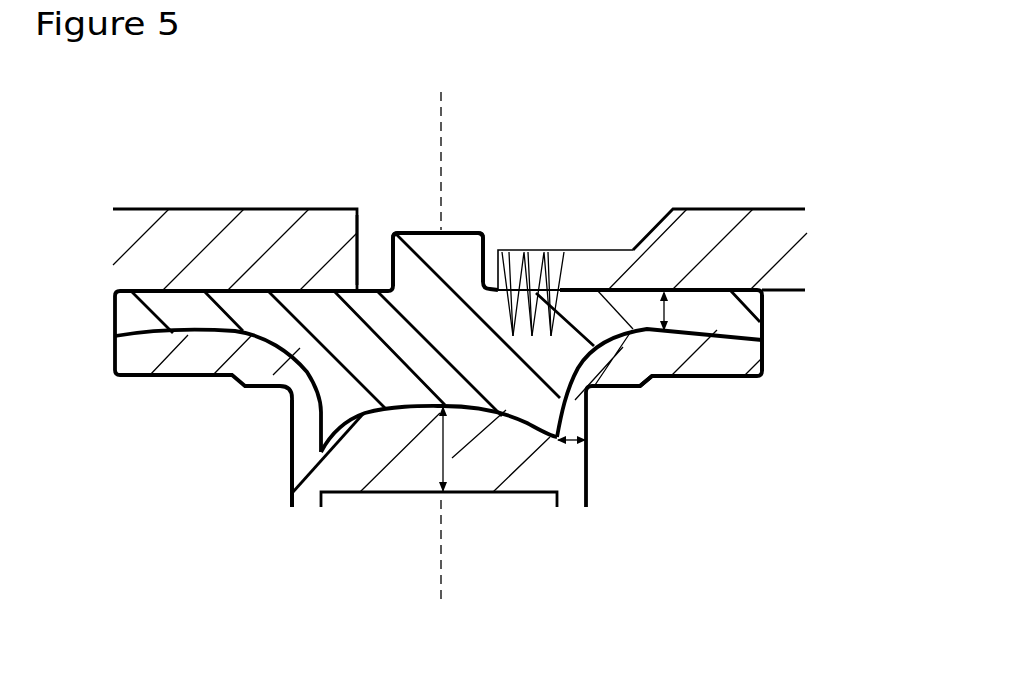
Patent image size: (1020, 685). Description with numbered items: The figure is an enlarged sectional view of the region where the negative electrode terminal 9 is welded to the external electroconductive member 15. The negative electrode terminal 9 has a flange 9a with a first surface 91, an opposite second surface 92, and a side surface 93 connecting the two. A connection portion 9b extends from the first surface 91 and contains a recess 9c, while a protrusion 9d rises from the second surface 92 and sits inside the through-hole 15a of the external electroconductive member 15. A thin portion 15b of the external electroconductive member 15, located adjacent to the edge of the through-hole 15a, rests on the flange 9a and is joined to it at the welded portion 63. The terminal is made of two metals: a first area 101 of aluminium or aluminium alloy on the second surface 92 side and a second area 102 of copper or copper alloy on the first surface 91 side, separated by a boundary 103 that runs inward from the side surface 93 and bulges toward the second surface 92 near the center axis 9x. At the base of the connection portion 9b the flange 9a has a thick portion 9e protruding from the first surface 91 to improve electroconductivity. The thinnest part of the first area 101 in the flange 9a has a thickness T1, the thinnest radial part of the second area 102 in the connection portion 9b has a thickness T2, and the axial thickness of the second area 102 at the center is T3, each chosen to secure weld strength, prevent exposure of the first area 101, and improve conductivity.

The negative electrode terminal 9 is at (277, 443).
The flange 9a is at (178, 310).
The connection portion 9b is at (415, 452).
The recess 9c is at (497, 493).
The protrusion 9d is at (405, 252).
The thick portion 9e is at (633, 383).
The center axis 9x is at (440, 335).
The external electroconductive member 15 is at (245, 248).
The through-hole 15a is at (363, 250).
The thin portion 15b is at (600, 270).
The welded portion 63 is at (525, 268).
The first surface 91 is at (707, 378).
The second surface 92 is at (687, 288).
The side surface 93 is at (115, 335).
The first area 101 is at (363, 343).
The second area 102 is at (367, 465).
The boundary 103 is at (718, 331).
The thickness T1 is at (681, 311).
The thickness T2 is at (571, 457).
The thickness T3 is at (457, 449).